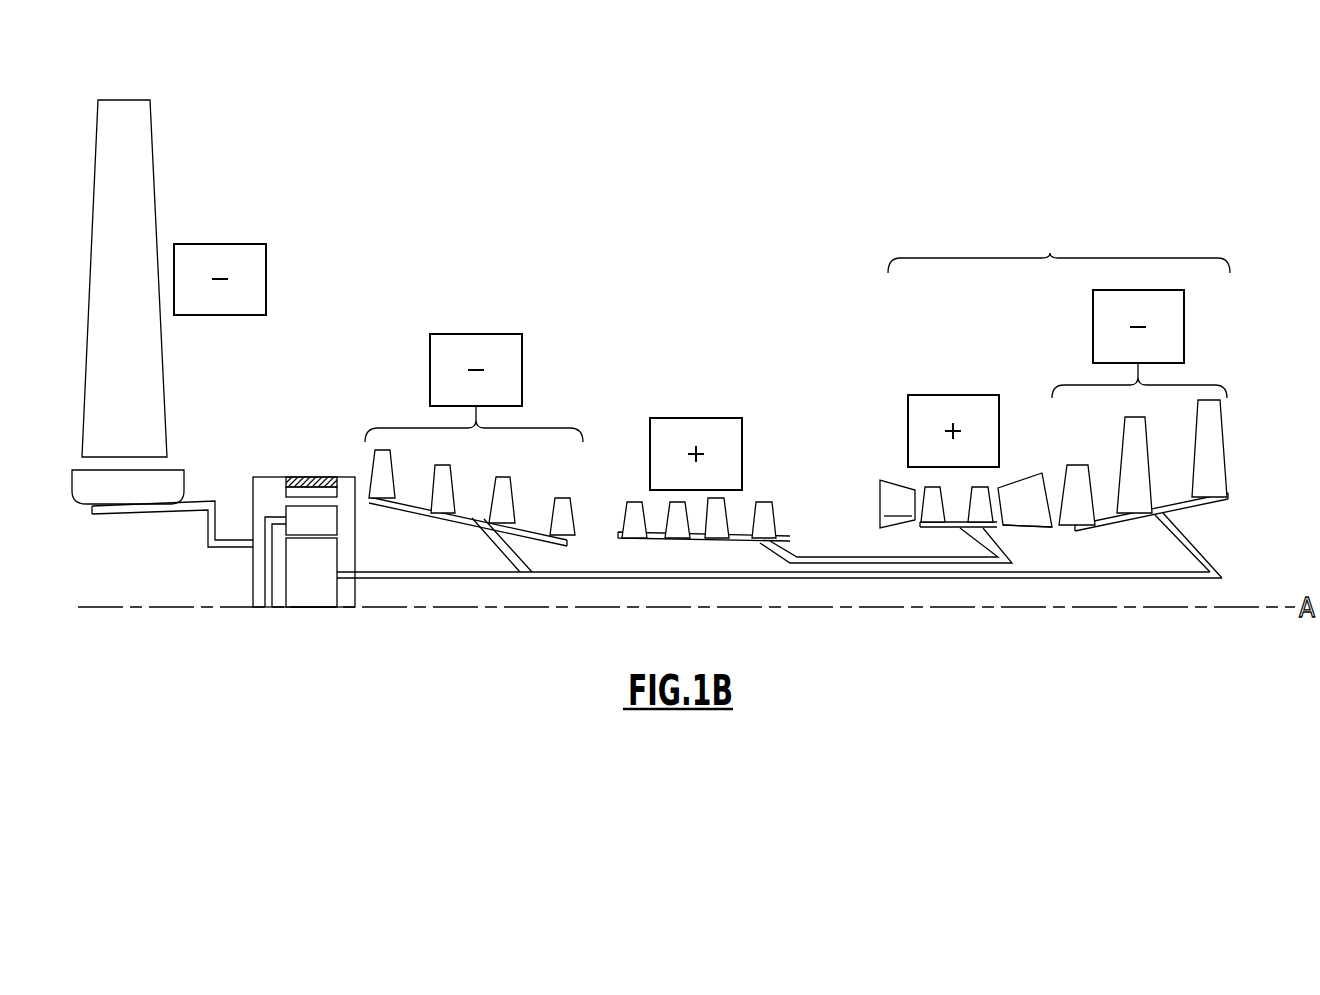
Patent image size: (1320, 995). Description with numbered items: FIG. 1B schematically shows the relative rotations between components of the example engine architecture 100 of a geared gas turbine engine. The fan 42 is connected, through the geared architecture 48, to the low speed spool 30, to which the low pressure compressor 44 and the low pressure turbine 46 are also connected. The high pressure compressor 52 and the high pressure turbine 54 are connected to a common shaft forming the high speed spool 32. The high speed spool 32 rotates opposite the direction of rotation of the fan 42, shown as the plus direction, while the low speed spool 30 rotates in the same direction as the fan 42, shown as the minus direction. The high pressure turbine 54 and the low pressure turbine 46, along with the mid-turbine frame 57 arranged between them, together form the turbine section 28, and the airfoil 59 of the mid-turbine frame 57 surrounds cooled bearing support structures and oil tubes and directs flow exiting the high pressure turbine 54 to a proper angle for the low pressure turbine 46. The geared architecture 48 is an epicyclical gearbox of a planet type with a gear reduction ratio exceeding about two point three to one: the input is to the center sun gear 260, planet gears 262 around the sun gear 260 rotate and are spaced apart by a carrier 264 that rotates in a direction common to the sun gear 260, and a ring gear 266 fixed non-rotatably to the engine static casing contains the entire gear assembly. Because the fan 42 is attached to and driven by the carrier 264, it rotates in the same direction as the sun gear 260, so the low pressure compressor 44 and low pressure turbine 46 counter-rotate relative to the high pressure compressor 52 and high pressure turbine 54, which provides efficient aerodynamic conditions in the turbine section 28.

The engine architecture 100 is at (848, 270).
The turbine section 28 is at (1050, 254).
The low speed spool 30 is at (598, 572).
The high speed spool 32 is at (838, 557).
The fan 42 is at (138, 223).
The low pressure compressor 44 is at (398, 429).
The low pressure turbine 46 is at (1213, 386).
The geared architecture 48 is at (288, 467).
The high pressure compressor 52 is at (762, 474).
The high pressure turbine 54 is at (934, 478).
The mid-turbine frame 57 is at (1021, 465).
The airfoil 59 is at (1027, 508).
The sun gear 260 is at (311, 588).
The planet gear 262 is at (327, 521).
The carrier 264 is at (265, 568).
The ring gear 266 is at (312, 494).